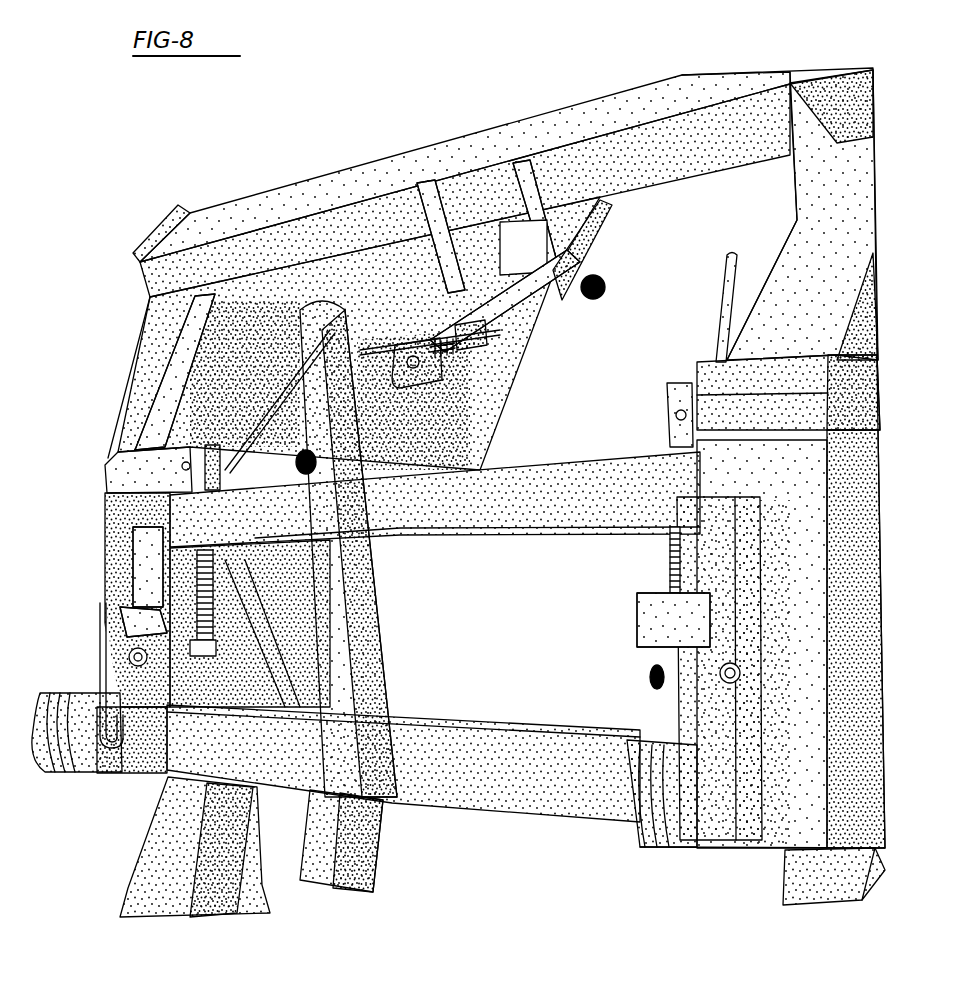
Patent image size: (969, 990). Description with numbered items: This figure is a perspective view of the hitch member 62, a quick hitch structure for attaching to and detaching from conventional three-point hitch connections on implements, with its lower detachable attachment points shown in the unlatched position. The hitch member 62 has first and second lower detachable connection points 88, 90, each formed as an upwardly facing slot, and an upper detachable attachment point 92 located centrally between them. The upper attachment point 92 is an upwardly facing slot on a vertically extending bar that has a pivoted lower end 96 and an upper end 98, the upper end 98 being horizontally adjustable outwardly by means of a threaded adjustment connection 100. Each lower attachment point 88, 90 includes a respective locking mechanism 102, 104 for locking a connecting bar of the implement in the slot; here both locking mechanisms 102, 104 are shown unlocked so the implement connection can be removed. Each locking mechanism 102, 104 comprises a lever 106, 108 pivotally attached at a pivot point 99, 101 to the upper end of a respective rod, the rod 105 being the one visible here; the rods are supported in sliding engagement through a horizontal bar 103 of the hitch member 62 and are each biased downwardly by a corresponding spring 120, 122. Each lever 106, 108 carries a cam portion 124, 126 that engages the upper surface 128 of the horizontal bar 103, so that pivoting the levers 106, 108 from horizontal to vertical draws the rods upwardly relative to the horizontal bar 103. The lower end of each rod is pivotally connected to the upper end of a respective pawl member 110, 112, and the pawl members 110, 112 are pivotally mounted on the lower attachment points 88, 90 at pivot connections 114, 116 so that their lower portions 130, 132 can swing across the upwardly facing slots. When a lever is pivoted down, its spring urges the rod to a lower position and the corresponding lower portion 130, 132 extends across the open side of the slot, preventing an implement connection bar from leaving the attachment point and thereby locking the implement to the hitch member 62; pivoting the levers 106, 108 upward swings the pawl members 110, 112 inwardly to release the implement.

The hitch member 62 is at (145, 282).
The first lower detachable connection point 88 is at (110, 757).
The second lower detachable connection point 90 is at (700, 828).
The upper detachable attachment point 92 is at (308, 342).
The pivoted lower end 96 is at (385, 795).
The upper end 98 is at (330, 396).
The pivot point 99 is at (180, 455).
The threaded adjustment connection 100 is at (500, 332).
The pivot point 101 is at (697, 392).
The locking mechanism 102 is at (215, 630).
The horizontal bar 103 is at (490, 515).
The locking mechanism 104 is at (635, 600).
The rod 105 is at (255, 710).
The lever 106 is at (183, 460).
The lever 108 is at (703, 388).
The pawl member 110 is at (96, 688).
The pawl member 112 is at (700, 688).
The pivot connection 114 is at (120, 607).
The pivot connection 116 is at (660, 668).
The spring 120 is at (140, 542).
The spring 122 is at (668, 570).
The cam portion 124 is at (225, 483).
The cam portion 126 is at (665, 438).
The upper surface 128 is at (553, 460).
The lower portion 130 is at (97, 705).
The lower portion 132 is at (636, 820).